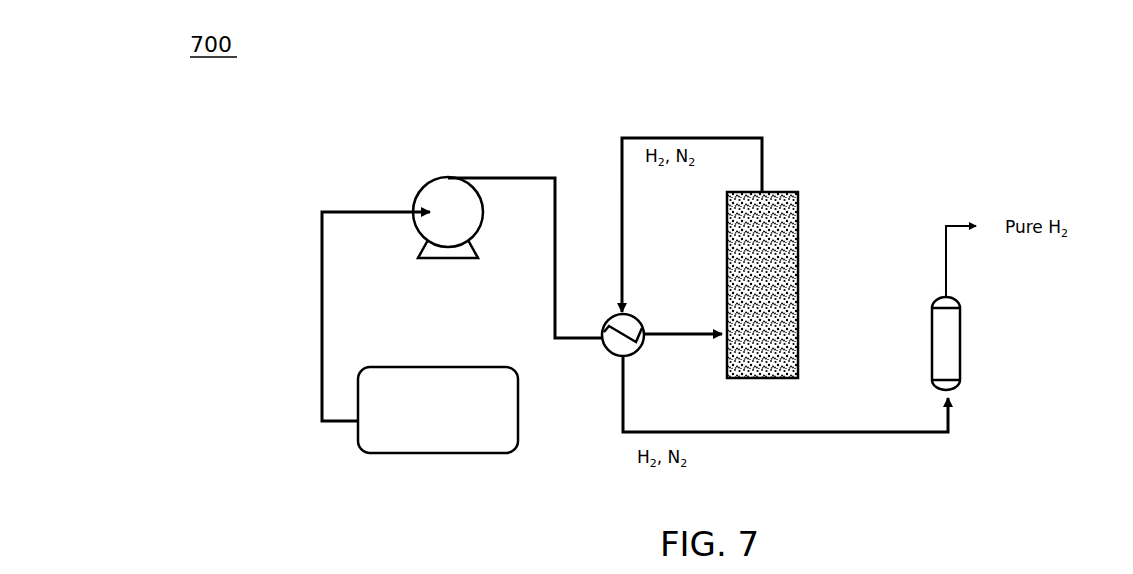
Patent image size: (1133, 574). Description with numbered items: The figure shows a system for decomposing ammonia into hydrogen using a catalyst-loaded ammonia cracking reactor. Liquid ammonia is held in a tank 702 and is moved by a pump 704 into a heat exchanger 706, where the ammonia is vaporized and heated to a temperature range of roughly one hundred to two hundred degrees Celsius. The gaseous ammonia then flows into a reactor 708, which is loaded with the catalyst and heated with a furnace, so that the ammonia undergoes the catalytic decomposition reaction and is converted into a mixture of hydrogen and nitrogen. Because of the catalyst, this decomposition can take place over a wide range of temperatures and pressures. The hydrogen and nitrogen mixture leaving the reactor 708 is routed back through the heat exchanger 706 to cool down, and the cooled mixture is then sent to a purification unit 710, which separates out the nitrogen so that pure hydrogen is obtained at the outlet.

The tank 702 is at (356, 458).
The pump 704 is at (410, 176).
The heat exchanger 706 is at (606, 306).
The reactor 708 is at (792, 180).
The purification unit 710 is at (970, 378).